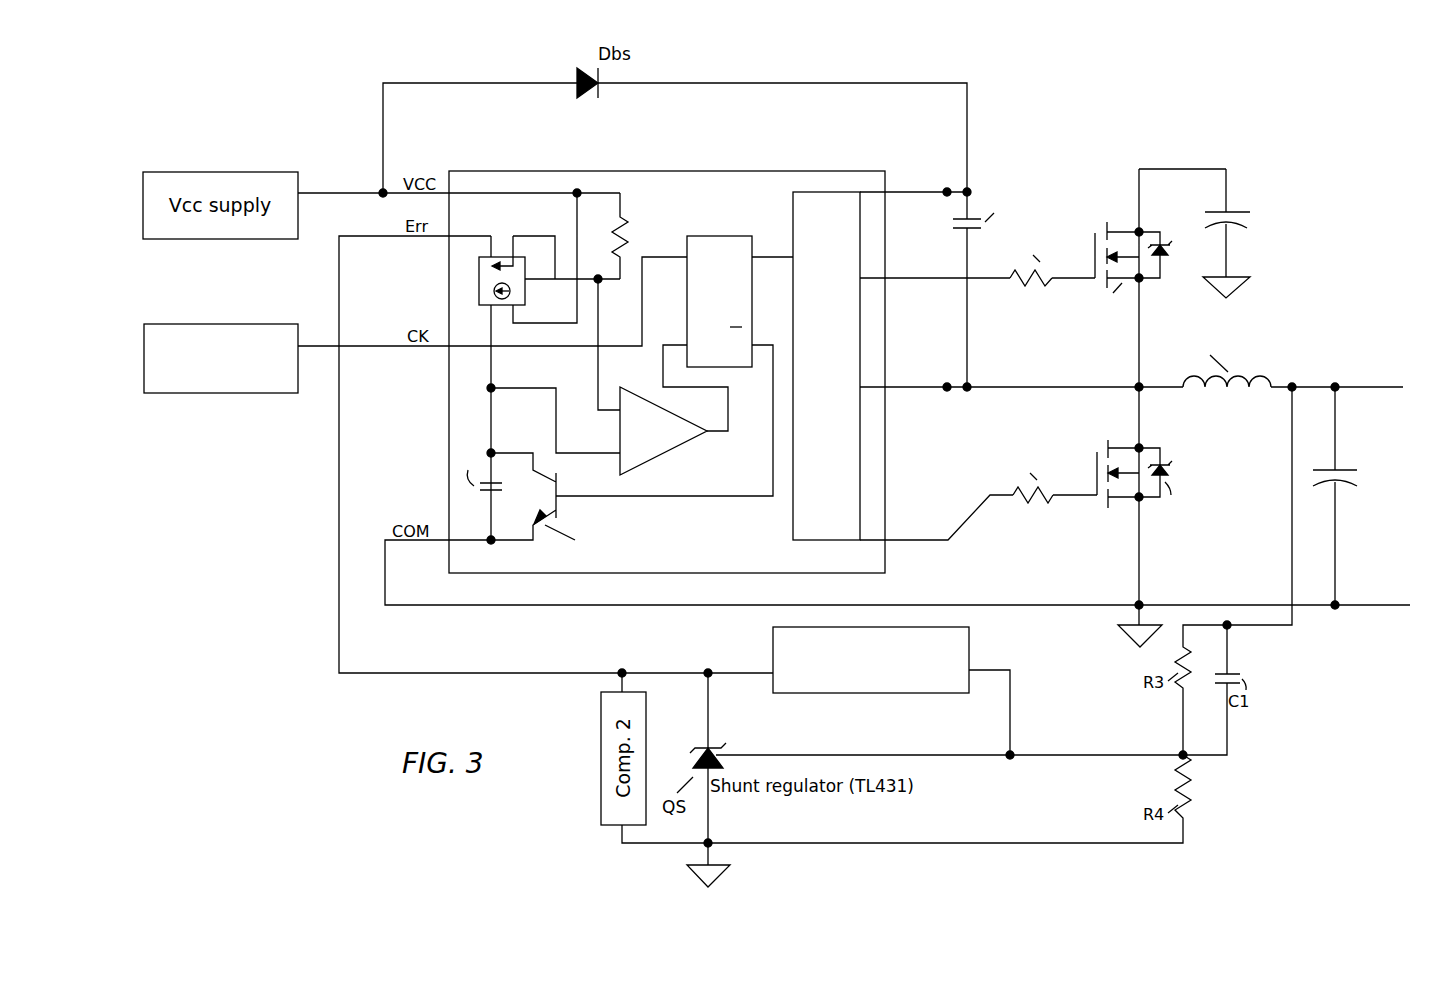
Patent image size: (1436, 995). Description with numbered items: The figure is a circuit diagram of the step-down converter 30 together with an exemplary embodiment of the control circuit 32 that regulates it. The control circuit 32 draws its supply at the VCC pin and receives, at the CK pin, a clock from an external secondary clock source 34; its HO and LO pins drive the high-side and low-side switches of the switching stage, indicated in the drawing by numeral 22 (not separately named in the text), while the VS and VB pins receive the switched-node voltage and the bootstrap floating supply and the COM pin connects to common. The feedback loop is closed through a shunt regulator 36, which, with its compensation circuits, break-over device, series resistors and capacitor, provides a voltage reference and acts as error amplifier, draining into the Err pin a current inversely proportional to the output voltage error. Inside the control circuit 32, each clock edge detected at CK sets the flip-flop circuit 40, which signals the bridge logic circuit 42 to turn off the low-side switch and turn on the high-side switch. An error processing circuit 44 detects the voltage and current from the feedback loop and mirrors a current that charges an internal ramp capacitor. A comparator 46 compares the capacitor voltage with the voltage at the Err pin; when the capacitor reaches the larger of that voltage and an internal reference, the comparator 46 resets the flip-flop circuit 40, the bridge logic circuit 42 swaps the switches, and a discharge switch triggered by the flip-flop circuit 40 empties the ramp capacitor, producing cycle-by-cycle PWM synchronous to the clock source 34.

The half bridge switching stage 22 is at (1119, 336).
The step-down converter 30 is at (1064, 155).
The control circuit 32 is at (722, 170).
The clock source 34 is at (206, 393).
The shunt regulator 36 is at (898, 729).
The flip-flop circuit 40 is at (712, 234).
The bridge logic circuit 42 is at (840, 514).
The error processing circuit 44 is at (502, 234).
The comparator 46 is at (668, 455).